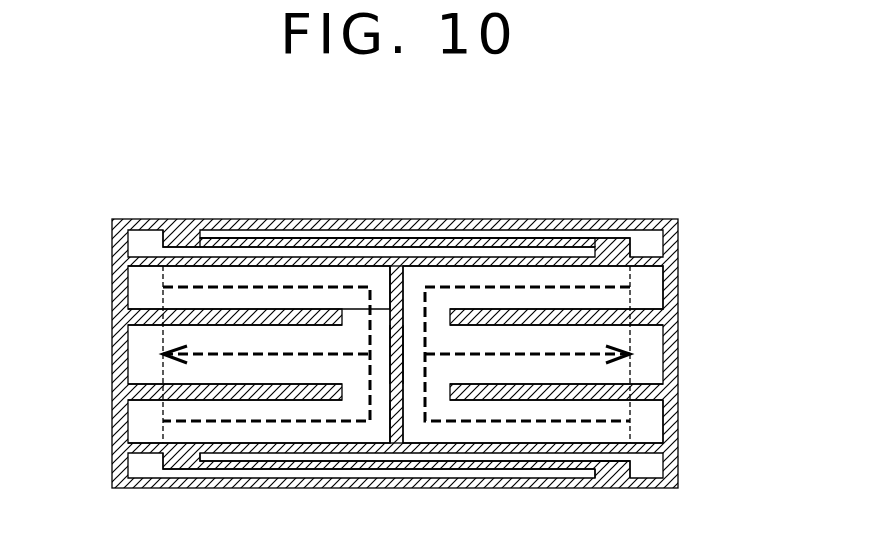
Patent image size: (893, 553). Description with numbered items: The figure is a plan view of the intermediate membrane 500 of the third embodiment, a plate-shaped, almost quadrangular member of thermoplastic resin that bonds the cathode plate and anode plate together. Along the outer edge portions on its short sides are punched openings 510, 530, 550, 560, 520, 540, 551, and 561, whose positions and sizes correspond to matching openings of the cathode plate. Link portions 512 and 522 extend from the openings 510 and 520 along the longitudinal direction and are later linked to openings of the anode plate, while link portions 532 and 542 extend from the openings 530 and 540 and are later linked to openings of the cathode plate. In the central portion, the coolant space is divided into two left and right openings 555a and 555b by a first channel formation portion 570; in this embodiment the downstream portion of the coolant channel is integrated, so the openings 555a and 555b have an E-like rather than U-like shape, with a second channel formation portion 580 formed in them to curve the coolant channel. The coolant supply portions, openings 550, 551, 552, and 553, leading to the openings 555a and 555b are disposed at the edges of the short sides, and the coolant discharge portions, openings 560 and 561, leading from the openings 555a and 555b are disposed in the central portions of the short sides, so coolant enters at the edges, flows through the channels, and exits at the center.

The intermediate membrane 500 is at (678, 238).
The opening 510 is at (145, 242).
The link portion 512 is at (580, 245).
The opening 520 is at (647, 468).
The link portion 522 is at (214, 458).
The opening 530 is at (145, 472).
The link portion 532 is at (573, 470).
The opening 540 is at (646, 245).
The link portion 542 is at (212, 238).
The opening 550 is at (138, 427).
The opening 551 is at (138, 281).
The opening 552 is at (648, 430).
The opening 553 is at (648, 287).
The opening 555a is at (342, 435).
The opening 555b is at (423, 435).
The opening 560 is at (138, 357).
The opening 561 is at (648, 356).
The first channel formation portion 570 is at (395, 265).
The second channel formation portion 580 is at (305, 312).